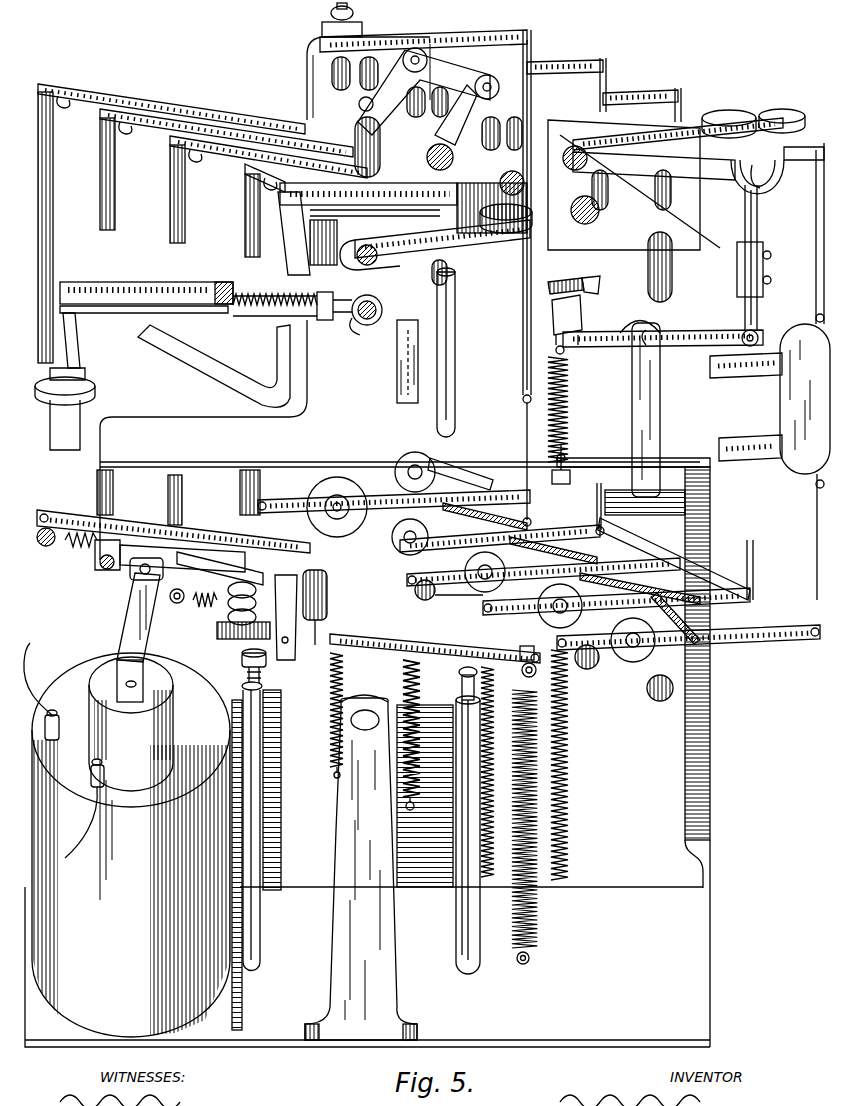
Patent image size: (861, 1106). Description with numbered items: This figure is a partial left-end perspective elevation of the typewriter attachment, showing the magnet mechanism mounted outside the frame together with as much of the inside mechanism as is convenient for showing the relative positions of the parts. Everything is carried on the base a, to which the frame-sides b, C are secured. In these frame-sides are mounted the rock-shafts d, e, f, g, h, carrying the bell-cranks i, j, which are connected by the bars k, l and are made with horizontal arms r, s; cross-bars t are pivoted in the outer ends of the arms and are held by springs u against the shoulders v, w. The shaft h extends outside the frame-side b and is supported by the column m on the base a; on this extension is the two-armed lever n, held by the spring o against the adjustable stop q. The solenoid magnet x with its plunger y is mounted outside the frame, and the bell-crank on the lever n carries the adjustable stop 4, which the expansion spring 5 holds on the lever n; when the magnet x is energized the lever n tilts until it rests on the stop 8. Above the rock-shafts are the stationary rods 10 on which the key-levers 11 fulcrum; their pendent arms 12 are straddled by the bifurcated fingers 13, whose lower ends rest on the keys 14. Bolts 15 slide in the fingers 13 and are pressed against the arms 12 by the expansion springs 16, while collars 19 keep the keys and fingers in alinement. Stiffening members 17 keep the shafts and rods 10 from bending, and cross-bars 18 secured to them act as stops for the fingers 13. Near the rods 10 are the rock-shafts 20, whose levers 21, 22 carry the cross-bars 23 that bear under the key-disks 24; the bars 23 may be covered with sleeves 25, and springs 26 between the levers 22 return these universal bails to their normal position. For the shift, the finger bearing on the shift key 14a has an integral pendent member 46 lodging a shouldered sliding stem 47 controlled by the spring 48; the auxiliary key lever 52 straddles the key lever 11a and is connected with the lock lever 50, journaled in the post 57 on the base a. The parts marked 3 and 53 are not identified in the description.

The frame-side C is at (322, 50).
The stationary rods 10 is at (370, 55).
The bar l is at (432, 45).
The lever 21 is at (493, 33).
The cross-bars 23 is at (530, 55).
The key lever 11a is at (722, 112).
The auxiliary key lever 52 is at (790, 145).
The rock-shafts 20 is at (330, 60).
The rock-shaft h is at (358, 104).
The bell-crank j is at (352, 128).
The horizontal arm s is at (168, 110).
The shoulder w is at (167, 161).
The cross-bars t is at (53, 187).
The bolts 15 is at (290, 235).
The bifurcated fingers 13 is at (145, 287).
The keys 14 is at (85, 405).
The shift key 14a is at (275, 335).
The expansion springs 16 is at (240, 320).
The pendent arms 12 is at (408, 268).
The collars 19 is at (358, 325).
The cross-bars 18 is at (397, 362).
The stiffening members 17 is at (462, 300).
The key-levers 11 is at (460, 240).
The key-disks 24 is at (510, 228).
The spring 48 is at (545, 292).
The shouldered sliding stem 47 is at (552, 318).
The pendent member 46 is at (598, 300).
The rock-shaft e is at (585, 670).
The rock-shaft d is at (658, 698).
The lock lever 50 is at (705, 328).
The sleeves 25 is at (524, 350).
The spring 53 is at (570, 405).
The post 57 is at (636, 425).
The levers 22 is at (318, 493).
The bell-crank i is at (410, 462).
The base a is at (700, 505).
The frame-side b is at (467, 760).
The horizontal arm r is at (78, 512).
The springs u is at (95, 553).
The shoulder v is at (128, 574).
The spring o is at (540, 908).
The bar k is at (127, 632).
The expansion spring 5 is at (228, 612).
The link 3 is at (284, 660).
The adjustable stop 4 is at (322, 645).
The stop 8 is at (243, 670).
The plunger y is at (95, 685).
The solenoid magnet x is at (131, 845).
The springs 26 is at (332, 722).
The column m is at (352, 818).
The adjustable stop q is at (460, 840).
The rock-shaft g is at (449, 599).
The two-armed lever n is at (468, 643).
The rock-shaft f is at (528, 652).